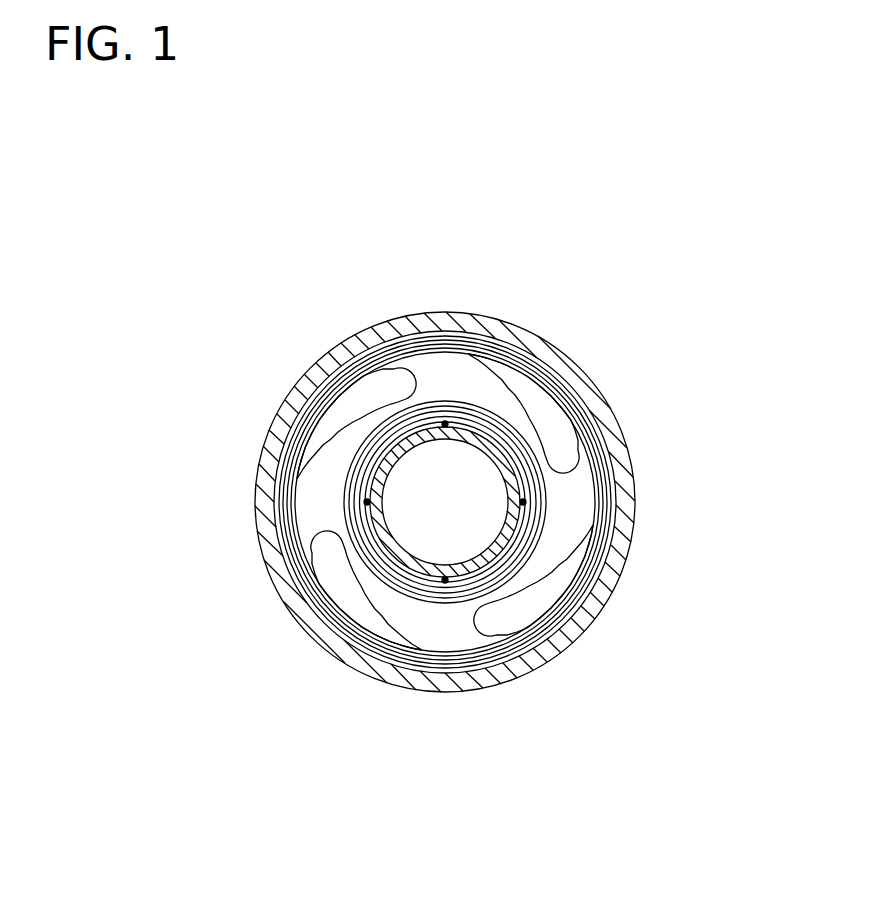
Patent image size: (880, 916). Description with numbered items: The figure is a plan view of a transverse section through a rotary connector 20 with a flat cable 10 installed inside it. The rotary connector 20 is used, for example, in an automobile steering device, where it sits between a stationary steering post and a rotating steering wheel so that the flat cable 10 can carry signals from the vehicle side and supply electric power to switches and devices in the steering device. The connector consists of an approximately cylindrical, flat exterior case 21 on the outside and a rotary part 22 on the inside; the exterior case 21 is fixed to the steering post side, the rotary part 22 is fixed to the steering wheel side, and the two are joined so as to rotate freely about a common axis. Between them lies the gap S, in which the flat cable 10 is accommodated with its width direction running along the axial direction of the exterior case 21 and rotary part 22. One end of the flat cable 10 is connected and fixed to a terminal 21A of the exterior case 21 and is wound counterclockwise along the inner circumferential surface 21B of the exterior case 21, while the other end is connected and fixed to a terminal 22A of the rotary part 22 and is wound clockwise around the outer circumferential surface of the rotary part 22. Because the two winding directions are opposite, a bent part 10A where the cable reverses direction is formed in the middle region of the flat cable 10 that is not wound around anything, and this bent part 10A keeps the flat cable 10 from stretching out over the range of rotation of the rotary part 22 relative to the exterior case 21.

The rotary connector 20 is at (630, 318).
The exterior case 21 is at (389, 548).
The terminal 21A is at (268, 452).
The inner circumferential surface 21B is at (378, 662).
The rotary part 22 is at (540, 530).
The terminal 22A is at (447, 423).
The flat cable 10 is at (456, 483).
The bent part 10A is at (402, 369).
The gap S is at (462, 372).